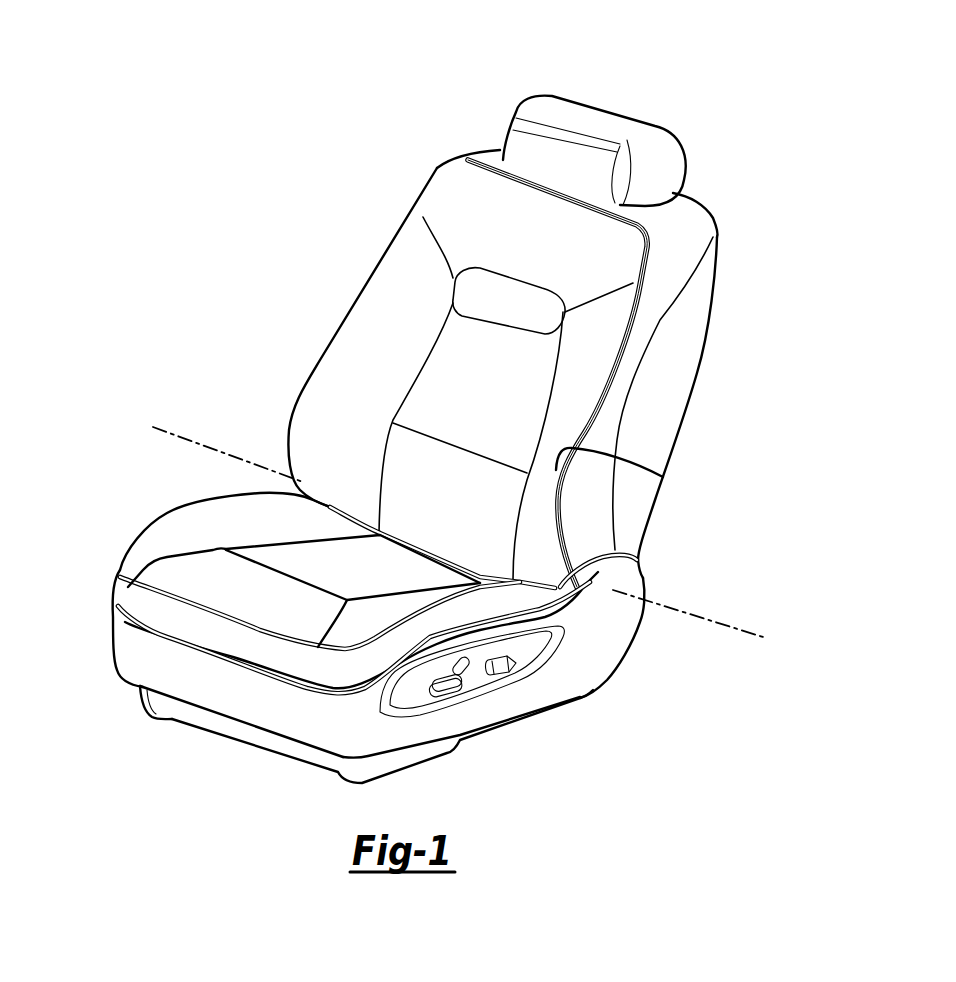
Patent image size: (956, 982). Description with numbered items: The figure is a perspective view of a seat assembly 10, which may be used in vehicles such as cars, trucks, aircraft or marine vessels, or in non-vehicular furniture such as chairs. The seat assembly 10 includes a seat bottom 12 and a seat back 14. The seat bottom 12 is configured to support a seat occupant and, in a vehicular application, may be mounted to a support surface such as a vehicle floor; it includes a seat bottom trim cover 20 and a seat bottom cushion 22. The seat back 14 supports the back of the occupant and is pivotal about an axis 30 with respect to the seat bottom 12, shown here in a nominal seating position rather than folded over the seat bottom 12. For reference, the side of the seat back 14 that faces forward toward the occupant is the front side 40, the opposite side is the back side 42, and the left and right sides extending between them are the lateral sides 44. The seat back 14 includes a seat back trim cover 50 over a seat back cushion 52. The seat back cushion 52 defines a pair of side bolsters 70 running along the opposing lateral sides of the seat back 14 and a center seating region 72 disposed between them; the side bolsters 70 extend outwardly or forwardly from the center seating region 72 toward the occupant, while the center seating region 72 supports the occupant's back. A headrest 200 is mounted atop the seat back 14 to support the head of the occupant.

The seat assembly 10 is at (375, 206).
The seat bottom 12 is at (642, 623).
The seat back 14 is at (538, 326).
The seat bottom trim cover 20 is at (323, 581).
The seat bottom cushion 22 is at (182, 573).
The axis 30 is at (753, 633).
The front side 40 is at (388, 450).
The back side 42 is at (717, 390).
The lateral sides 44 is at (378, 242).
The seat back trim cover 50 is at (451, 183).
The seat back cushion 52 is at (617, 263).
The side bolsters 70 is at (663, 477).
The center seating region 72 is at (496, 376).
The headrest 200 is at (593, 123).